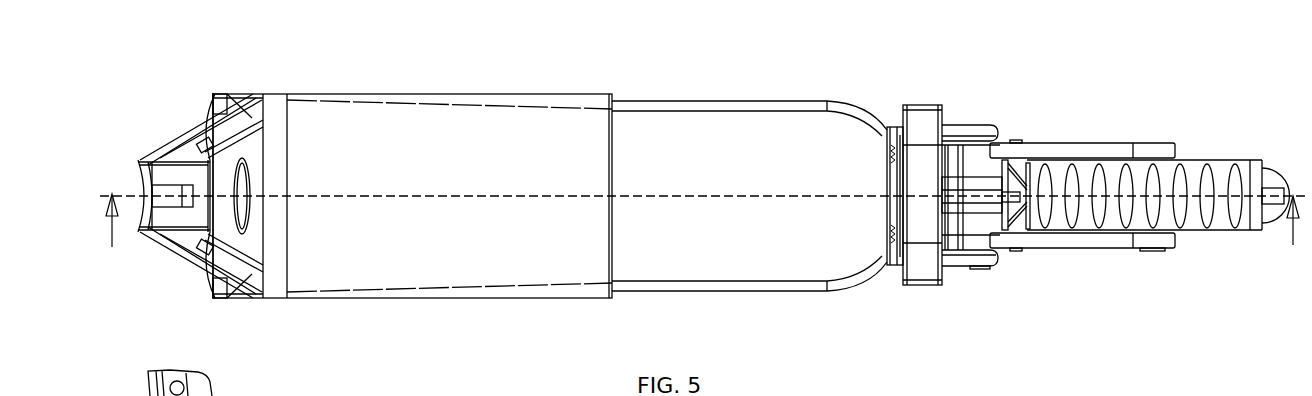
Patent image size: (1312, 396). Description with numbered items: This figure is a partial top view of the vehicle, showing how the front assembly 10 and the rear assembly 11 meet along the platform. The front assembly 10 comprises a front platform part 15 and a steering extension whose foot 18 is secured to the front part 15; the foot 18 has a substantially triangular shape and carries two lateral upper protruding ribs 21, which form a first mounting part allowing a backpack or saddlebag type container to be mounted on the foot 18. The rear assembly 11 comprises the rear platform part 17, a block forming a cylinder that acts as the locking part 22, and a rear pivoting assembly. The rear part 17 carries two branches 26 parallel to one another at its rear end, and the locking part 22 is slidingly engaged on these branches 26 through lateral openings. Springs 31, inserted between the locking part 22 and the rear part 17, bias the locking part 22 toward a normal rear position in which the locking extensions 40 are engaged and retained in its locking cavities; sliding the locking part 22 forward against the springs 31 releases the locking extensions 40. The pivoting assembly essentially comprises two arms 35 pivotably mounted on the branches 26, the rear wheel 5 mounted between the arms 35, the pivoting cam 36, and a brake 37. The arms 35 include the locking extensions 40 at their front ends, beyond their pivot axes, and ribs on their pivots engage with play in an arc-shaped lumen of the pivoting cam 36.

The rear wheel 5 is at (1272, 170).
The front assembly 10 is at (696, 227).
The rear assembly 11 is at (836, 305).
The front platform part 15 is at (430, 300).
The rear platform part 17 is at (749, 227).
The foot 18 is at (229, 178).
The lateral upper protruding ribs 21 is at (243, 118).
The locking part 22 is at (932, 113).
The branches 26 is at (975, 125).
The springs 31 is at (899, 150).
The arms 35 is at (1055, 142).
The pivoting cam 36 is at (992, 212).
The brake 37 is at (1192, 158).
The locking extensions 40 is at (948, 240).